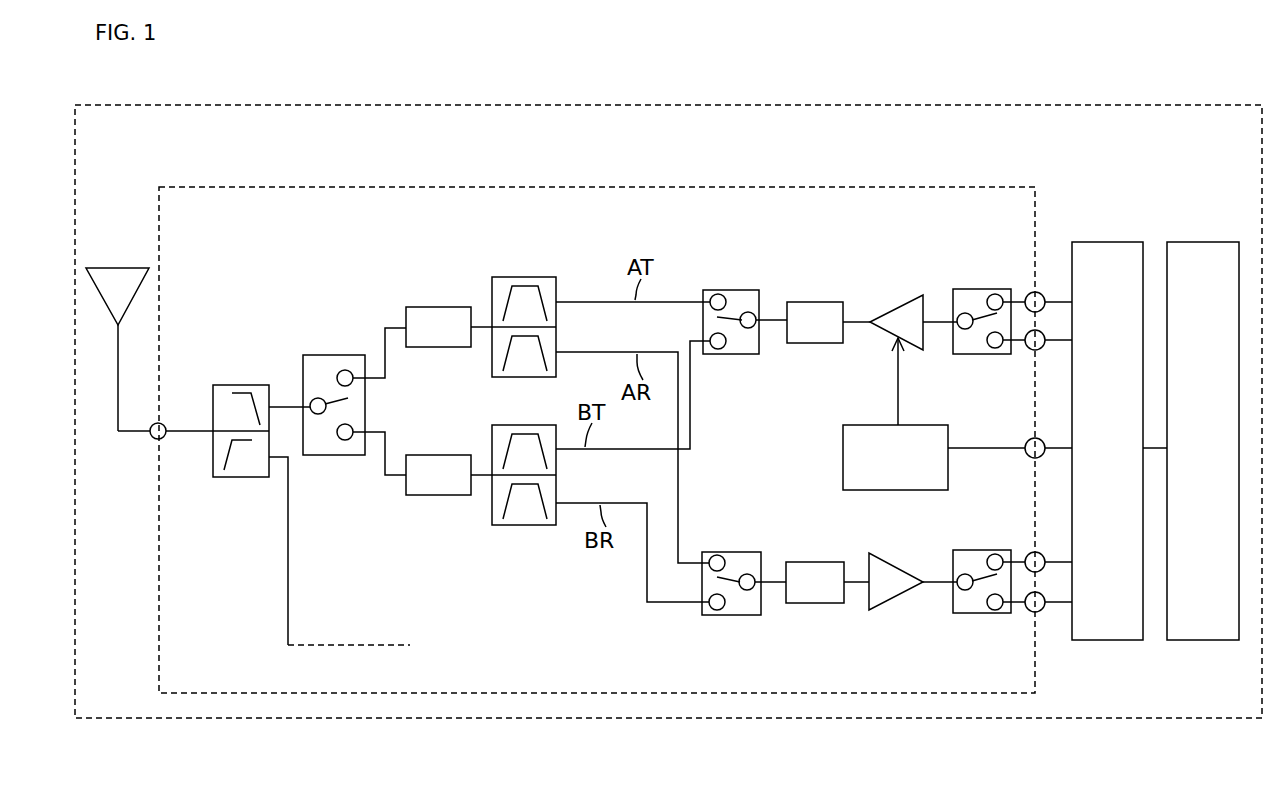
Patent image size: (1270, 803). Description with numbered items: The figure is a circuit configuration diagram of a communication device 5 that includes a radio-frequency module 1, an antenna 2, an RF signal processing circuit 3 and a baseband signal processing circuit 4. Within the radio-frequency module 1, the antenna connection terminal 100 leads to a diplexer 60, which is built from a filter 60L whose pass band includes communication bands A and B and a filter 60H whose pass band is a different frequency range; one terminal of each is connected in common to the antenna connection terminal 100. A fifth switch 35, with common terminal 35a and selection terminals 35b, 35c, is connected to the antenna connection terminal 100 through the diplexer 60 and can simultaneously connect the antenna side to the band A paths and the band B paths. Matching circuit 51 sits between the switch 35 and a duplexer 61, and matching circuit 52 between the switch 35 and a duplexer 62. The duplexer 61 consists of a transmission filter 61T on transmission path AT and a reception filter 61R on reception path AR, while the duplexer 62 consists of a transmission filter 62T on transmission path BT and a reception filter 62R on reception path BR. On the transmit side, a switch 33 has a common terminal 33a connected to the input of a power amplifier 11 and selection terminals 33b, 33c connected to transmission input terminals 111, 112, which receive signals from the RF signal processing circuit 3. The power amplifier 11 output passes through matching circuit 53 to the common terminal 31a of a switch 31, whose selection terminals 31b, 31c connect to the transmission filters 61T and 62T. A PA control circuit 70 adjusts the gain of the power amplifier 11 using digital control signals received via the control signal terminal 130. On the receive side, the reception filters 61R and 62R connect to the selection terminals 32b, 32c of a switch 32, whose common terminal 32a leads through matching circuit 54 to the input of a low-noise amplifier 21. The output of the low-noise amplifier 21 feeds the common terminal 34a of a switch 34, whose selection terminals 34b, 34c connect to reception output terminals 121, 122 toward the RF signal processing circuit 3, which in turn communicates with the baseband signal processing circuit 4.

The radio-frequency module 1 is at (978, 187).
The antenna 2 is at (114, 268).
The RF signal processing circuit (RFIC) 3 is at (1097, 242).
The baseband signal processing circuit (BBIC) 4 is at (1192, 242).
The communication device 5 is at (1200, 105).
The power amplifier 11 is at (894, 301).
The low-noise amplifier 21 is at (900, 567).
The switch 31 is at (740, 310).
The common terminal 31a is at (748, 312).
The selection terminal 31b is at (712, 291).
The selection terminal 31c is at (716, 349).
The switch 32 is at (741, 574).
The common terminal 32a is at (748, 574).
The selection terminal 32b is at (713, 553).
The selection terminal 32c is at (716, 610).
The switch 33 is at (969, 324).
The common terminal 33a is at (967, 329).
The selection terminal 33b is at (992, 295).
The selection terminal 33c is at (993, 349).
The switch 34 is at (969, 587).
The common terminal 34a is at (967, 590).
The selection terminal 34b is at (992, 555).
The selection terminal 34c is at (993, 611).
The switch 35 is at (331, 399).
The common terminal 35a is at (316, 398).
The selection terminal 35b is at (348, 370).
The selection terminal 35c is at (346, 440).
The matching circuit 51 is at (430, 307).
The matching circuit 52 is at (430, 455).
The matching circuit 53 is at (803, 302).
The matching circuit 54 is at (803, 562).
The diplexer 60 is at (222, 433).
The filter 60L is at (236, 385).
The filter 60H is at (252, 484).
The duplexer 61 is at (581, 329).
The transmission filter 61T is at (558, 317).
The reception filter 61R is at (558, 344).
The duplexer 62 is at (581, 477).
The transmission filter 62T is at (558, 466).
The reception filter 62R is at (558, 494).
The PA control circuit 70 is at (861, 425).
The antenna connection terminal 100 is at (152, 439).
The transmission input terminal 111 is at (1029, 295).
The transmission input terminal 112 is at (1030, 351).
The reception output terminal 121 is at (1029, 555).
The reception output terminal 122 is at (1030, 613).
The control signal terminal 130 is at (1025, 454).